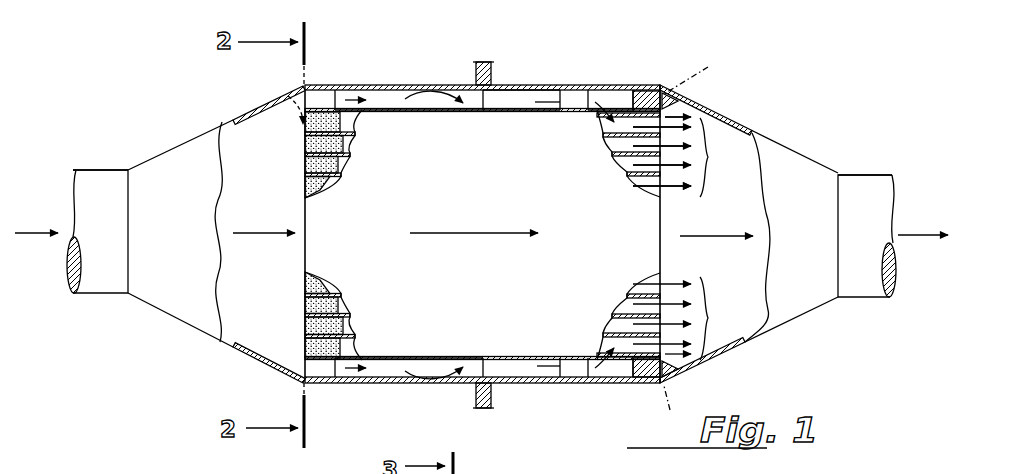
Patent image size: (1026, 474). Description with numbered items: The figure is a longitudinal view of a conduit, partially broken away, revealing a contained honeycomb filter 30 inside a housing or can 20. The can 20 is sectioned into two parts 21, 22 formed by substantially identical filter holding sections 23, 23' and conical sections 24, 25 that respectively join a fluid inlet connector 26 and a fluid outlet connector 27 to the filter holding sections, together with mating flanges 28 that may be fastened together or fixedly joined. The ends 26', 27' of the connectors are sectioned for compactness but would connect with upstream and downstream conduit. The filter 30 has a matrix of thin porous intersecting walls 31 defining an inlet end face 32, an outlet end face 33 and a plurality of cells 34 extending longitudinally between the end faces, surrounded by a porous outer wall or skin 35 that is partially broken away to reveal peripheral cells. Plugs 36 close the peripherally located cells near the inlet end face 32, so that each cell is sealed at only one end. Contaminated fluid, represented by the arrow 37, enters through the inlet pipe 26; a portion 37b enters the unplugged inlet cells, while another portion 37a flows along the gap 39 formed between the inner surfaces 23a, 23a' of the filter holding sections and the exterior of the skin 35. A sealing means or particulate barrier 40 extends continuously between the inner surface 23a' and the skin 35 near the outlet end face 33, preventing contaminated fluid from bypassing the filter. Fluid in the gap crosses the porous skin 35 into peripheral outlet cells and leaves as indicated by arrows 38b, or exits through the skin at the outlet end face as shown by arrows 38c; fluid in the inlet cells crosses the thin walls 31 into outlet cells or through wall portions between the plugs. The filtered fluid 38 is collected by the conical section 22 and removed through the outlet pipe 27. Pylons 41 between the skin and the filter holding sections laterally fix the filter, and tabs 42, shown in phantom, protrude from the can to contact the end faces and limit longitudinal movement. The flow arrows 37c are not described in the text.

The housing or can 20 is at (384, 82).
The can part 21 is at (280, 95).
The can part 22 is at (735, 119).
The filter holding section 23 is at (447, 398).
The inner surface of filter holding section 23a is at (409, 68).
The filter holding section 23' is at (540, 50).
The inner surface of filter holding section 23a' is at (627, 55).
The conical section 24 is at (188, 168).
The conical section 25 is at (810, 158).
The fluid inlet connector 26 is at (97, 265).
The end of fluid inlet connector 26' is at (94, 138).
The fluid outlet connector 27 is at (875, 261).
The end of fluid outlet connector 27' is at (882, 146).
The mating flanges 28 is at (487, 63).
The filter 30 is at (302, 304).
The thin porous intersecting walls 31 is at (343, 322).
The inlet end face 32 is at (307, 270).
The outlet end face 33 is at (660, 256).
The cells 34 is at (613, 315).
The porous outer wall or skin 35 is at (499, 293).
The plugs 36 is at (305, 165).
The contaminated fluid 37 is at (20, 231).
The contaminated fluid in gap 37a is at (348, 97).
The contaminated fluid entering inlet cells 37b is at (252, 237).
The main gas flow 37c is at (446, 232).
The filtered fluid 38 is at (695, 231).
The filtered fluid through outlet cells 38b is at (686, 238).
The filtered fluid exiting at outlet end face 38c is at (678, 102).
The gap 39 is at (513, 100).
The sealing means or particulate barrier 40 is at (643, 97).
The pylons 41 is at (318, 97).
The tabs 42 is at (689, 241).